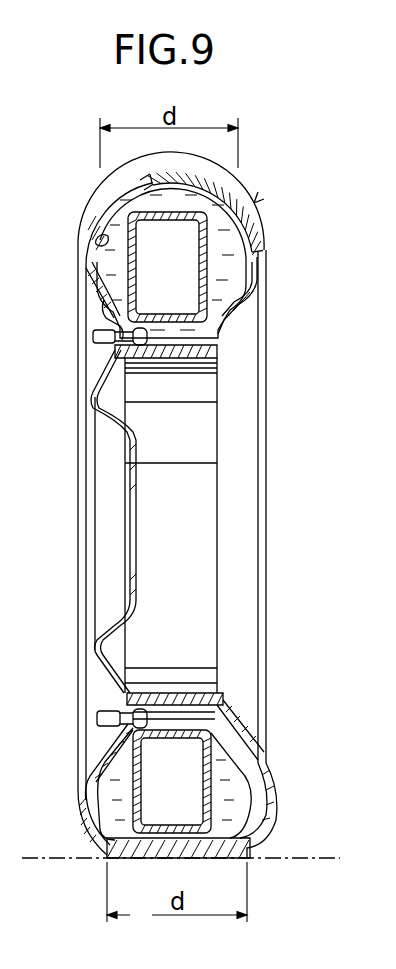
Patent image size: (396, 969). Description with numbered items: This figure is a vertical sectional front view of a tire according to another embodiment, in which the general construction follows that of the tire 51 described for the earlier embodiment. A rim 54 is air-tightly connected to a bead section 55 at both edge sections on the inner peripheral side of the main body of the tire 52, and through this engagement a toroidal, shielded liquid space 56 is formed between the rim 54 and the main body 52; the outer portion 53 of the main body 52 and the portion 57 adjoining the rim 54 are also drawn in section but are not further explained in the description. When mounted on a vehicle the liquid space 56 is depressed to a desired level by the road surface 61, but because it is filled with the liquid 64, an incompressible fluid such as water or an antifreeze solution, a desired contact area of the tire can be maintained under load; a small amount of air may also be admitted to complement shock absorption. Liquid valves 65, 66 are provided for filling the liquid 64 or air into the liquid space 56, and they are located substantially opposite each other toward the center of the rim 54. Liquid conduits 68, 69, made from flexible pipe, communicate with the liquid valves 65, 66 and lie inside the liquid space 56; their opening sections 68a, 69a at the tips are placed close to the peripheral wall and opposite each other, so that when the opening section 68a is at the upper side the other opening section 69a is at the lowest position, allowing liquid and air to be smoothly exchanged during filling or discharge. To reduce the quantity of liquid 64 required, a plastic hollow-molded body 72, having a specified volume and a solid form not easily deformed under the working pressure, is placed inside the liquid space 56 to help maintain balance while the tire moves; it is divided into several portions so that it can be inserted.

The tire 51 is at (255, 200).
The main body of the tire 52 is at (78, 240).
The outer shell 53 is at (207, 172).
The rim 54 is at (87, 278).
The bead section 55 is at (90, 293).
The liquid space 56 is at (97, 230).
The support plate 57 is at (110, 437).
The road surface 61 is at (253, 860).
The liquid 64 is at (224, 232).
The liquid valve 65 is at (100, 342).
The liquid valve 66 is at (100, 718).
The liquid conduit 68 is at (260, 252).
The opening section 68a is at (149, 188).
The liquid conduit 69 is at (277, 808).
The opening section 69a is at (173, 838).
The plastic hollow-molded body 72 is at (200, 260).